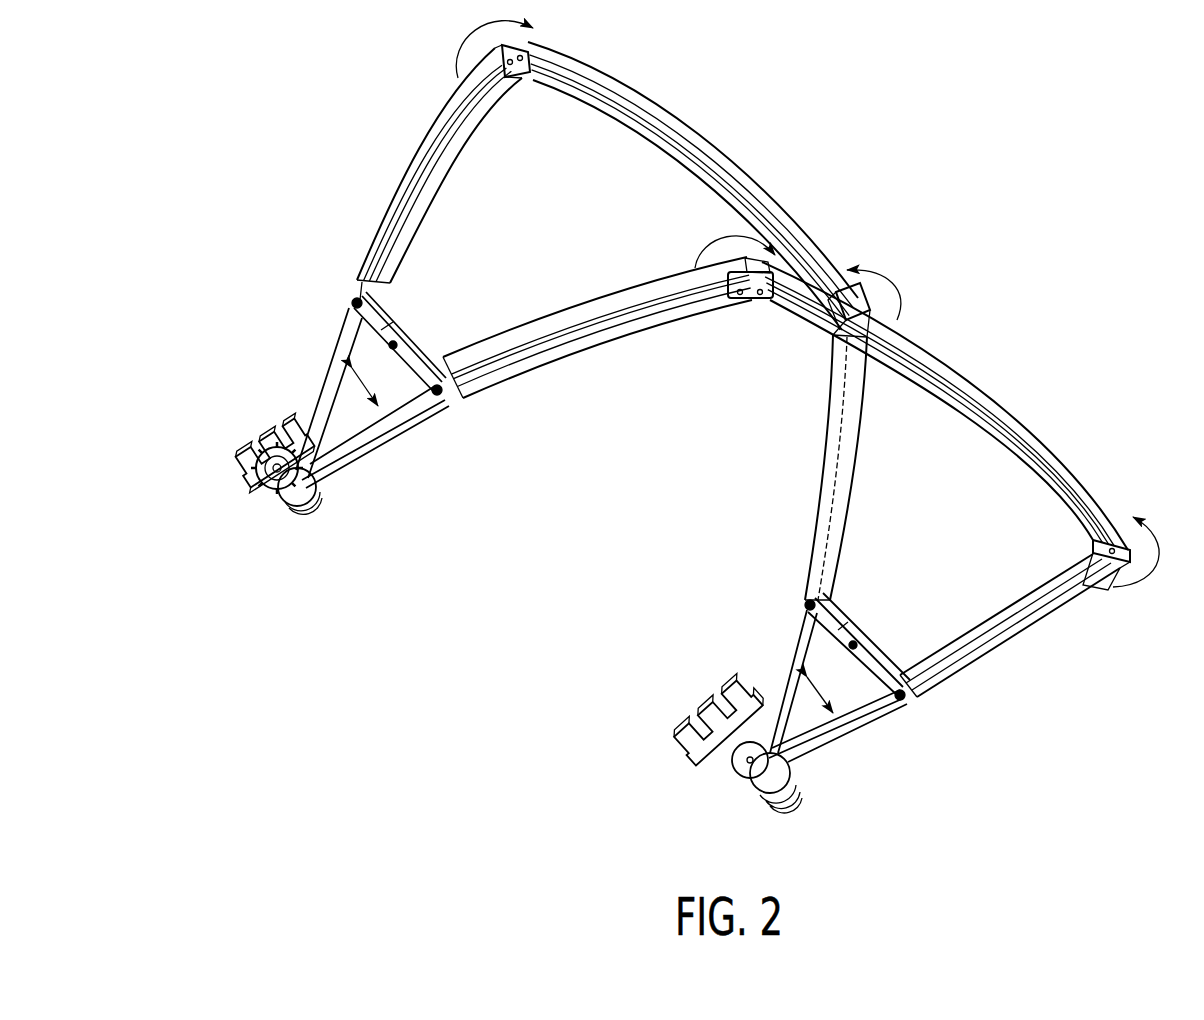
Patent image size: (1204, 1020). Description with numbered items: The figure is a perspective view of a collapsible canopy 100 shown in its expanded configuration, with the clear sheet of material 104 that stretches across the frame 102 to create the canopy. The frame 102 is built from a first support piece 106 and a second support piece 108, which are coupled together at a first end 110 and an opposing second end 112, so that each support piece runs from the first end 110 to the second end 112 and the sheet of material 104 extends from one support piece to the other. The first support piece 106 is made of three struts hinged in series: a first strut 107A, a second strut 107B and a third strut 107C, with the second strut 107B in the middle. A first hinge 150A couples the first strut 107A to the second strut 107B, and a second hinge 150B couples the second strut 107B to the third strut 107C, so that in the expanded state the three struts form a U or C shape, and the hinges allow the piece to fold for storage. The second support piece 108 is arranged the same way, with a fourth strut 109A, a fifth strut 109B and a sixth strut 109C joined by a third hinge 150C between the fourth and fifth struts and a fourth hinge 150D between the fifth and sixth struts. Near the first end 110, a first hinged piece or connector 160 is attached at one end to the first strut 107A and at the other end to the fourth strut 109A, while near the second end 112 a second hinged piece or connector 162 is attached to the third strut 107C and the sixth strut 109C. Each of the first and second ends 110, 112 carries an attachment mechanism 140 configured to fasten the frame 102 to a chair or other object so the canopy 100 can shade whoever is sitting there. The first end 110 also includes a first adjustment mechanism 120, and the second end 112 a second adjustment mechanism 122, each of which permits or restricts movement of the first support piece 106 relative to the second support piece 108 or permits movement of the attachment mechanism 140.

The collapsible canopy 100 is at (822, 162).
The frame 102 is at (418, 440).
The sheet of material 104 is at (950, 587).
The first support piece 106 is at (840, 747).
The second support piece 108 is at (333, 328).
The first end 110 is at (310, 510).
The second end 112 is at (730, 787).
The first adjustment mechanism 120 is at (257, 510).
The second adjustment mechanism 122 is at (800, 797).
The attachment mechanism 140 is at (240, 428).
The first hinge 150A is at (720, 253).
The second hinge 150B is at (1060, 545).
The third hinge 150C is at (485, 57).
The fourth hinge 150D is at (860, 300).
The first hinged piece or connector 160 is at (423, 340).
The second hinged piece or connector 162 is at (840, 595).
The first strut 107A is at (527, 350).
The second strut 107B is at (947, 367).
The third strut 107C is at (1057, 603).
The fourth strut 109A is at (358, 298).
The fifth strut 109B is at (657, 123).
The sixth strut 109C is at (840, 463).